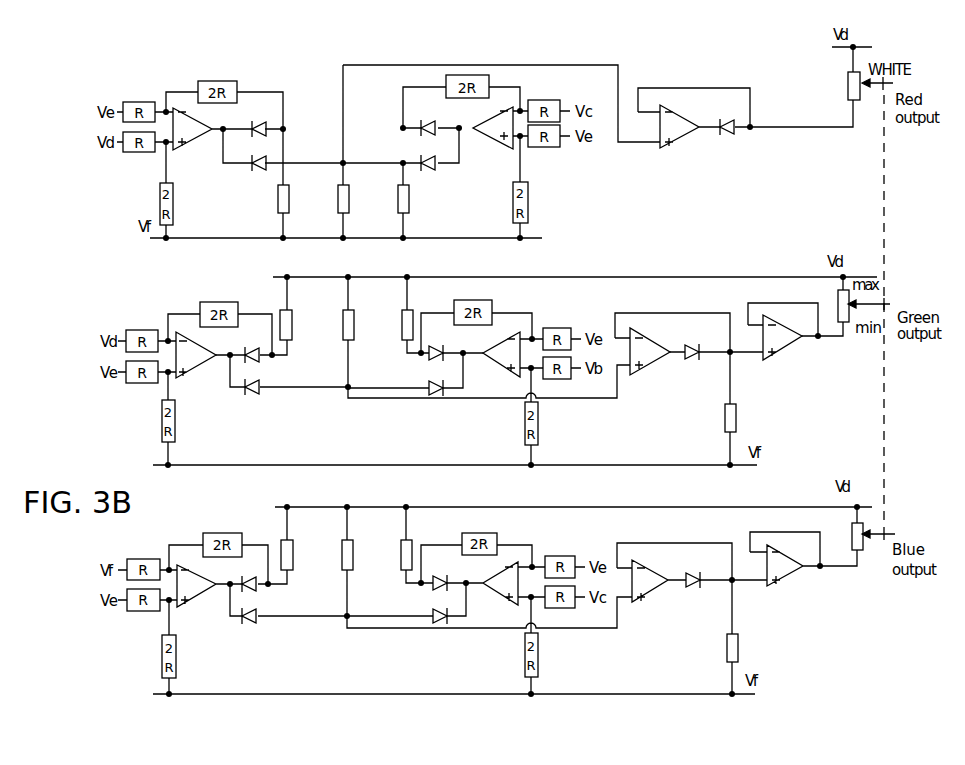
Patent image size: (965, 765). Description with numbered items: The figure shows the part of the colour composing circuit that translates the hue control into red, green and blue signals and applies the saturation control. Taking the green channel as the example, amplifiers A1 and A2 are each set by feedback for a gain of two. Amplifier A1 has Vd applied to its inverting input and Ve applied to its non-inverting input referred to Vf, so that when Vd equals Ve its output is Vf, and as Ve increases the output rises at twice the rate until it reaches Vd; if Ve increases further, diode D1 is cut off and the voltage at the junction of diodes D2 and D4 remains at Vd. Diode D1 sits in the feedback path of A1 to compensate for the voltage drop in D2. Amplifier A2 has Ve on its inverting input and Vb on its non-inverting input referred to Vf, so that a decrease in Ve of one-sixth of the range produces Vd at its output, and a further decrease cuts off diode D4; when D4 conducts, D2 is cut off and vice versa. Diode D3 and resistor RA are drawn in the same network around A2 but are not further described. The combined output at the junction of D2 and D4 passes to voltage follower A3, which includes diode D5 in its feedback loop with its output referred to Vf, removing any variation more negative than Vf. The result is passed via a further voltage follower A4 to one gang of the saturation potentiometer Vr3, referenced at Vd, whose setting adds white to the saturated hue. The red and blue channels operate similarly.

The amplifier A1 is at (196, 355).
The amplifier A2 is at (501, 354).
The voltage follower A3 is at (650, 351).
The voltage follower A4 is at (782, 337).
The diode D1 is at (252, 345).
The diode D2 is at (252, 399).
The diode D3 is at (437, 344).
The diode D4 is at (423, 382).
The diode D5 is at (691, 367).
The resistor RA is at (358, 325).
The triple-gang potentiometer Vr3 is at (853, 306).